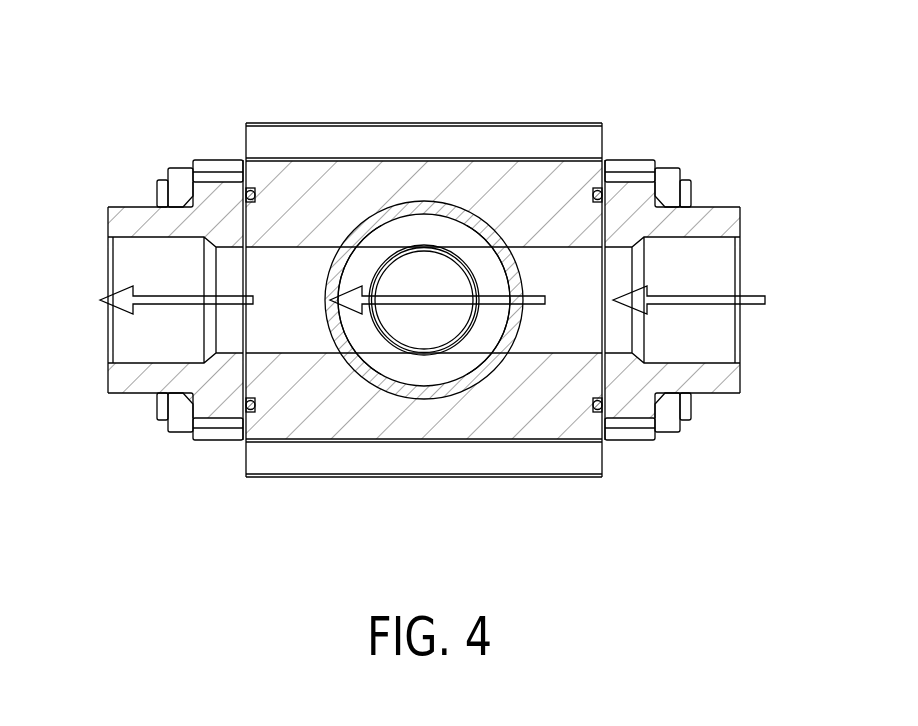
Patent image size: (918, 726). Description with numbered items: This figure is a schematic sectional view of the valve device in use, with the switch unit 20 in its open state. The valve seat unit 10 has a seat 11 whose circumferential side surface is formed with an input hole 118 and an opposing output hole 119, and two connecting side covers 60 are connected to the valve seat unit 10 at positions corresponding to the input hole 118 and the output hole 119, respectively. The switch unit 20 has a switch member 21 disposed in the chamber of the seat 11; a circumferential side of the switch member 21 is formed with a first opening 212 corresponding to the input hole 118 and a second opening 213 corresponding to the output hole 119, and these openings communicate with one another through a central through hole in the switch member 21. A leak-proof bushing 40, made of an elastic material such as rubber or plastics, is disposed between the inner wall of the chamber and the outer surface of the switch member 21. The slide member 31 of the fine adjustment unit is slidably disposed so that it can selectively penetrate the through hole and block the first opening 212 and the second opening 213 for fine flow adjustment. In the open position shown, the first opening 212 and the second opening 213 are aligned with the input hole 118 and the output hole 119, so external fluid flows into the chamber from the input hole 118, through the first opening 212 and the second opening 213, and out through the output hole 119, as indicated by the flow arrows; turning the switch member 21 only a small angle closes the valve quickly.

The valve seat unit 10 is at (290, 123).
The seat 11 is at (350, 123).
The switch unit 20 is at (382, 380).
The switch member 21 is at (423, 233).
The slide member 31 is at (442, 278).
The leak-proof bushing 40 is at (417, 400).
The connecting side cover 60 is at (143, 207).
The input hole 118 is at (597, 263).
The output hole 119 is at (248, 327).
The first opening 212 is at (487, 325).
The second opening 213 is at (363, 335).